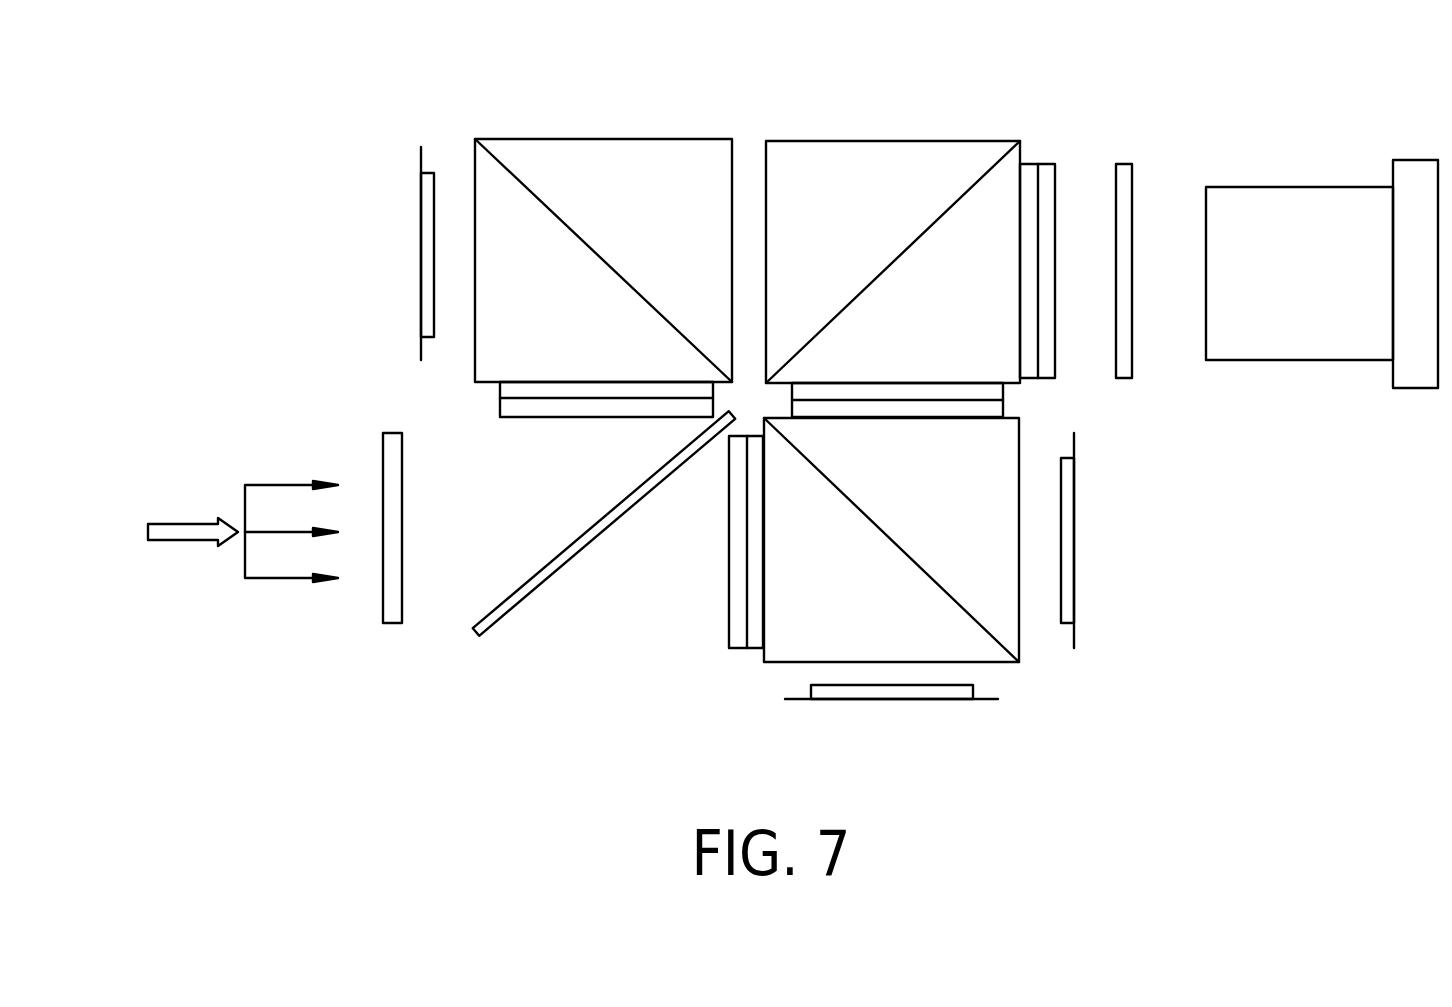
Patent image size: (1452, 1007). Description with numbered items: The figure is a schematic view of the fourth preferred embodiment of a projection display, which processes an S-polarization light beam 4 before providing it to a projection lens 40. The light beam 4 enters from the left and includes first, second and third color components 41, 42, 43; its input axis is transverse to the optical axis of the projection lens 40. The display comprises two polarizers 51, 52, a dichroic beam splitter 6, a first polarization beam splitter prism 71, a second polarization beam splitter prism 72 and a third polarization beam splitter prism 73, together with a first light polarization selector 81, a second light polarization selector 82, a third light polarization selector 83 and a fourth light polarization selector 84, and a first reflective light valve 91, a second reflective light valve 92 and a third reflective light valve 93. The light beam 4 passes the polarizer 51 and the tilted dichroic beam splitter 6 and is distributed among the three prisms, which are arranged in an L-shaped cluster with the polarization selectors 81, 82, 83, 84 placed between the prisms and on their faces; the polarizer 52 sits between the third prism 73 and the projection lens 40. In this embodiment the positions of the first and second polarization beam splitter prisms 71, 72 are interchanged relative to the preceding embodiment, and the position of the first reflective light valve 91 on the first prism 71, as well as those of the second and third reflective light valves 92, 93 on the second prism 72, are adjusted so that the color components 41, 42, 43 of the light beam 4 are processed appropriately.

The S-polarization light beam 4 is at (172, 540).
The projection lens 40 is at (1282, 360).
The first color component 41 is at (275, 578).
The second color component 42 is at (257, 485).
The third color component 43 is at (292, 532).
The polarizer 51 is at (390, 623).
The polarizer 52 is at (1127, 182).
The dichroic beam splitter 6 is at (550, 580).
The first polarization beam splitter prism 71 is at (629, 155).
The second polarization beam splitter prism 72 is at (790, 642).
The third polarization beam splitter prism 73 is at (874, 158).
The first light polarization selector 81 is at (735, 633).
The second light polarization selector 82 is at (1003, 393).
The third light polarization selector 83 is at (1048, 177).
The fourth light polarization selector 84 is at (552, 412).
The first reflective light valve 91 is at (421, 240).
The second reflective light valve 92 is at (1065, 528).
The third reflective light valve 93 is at (897, 695).